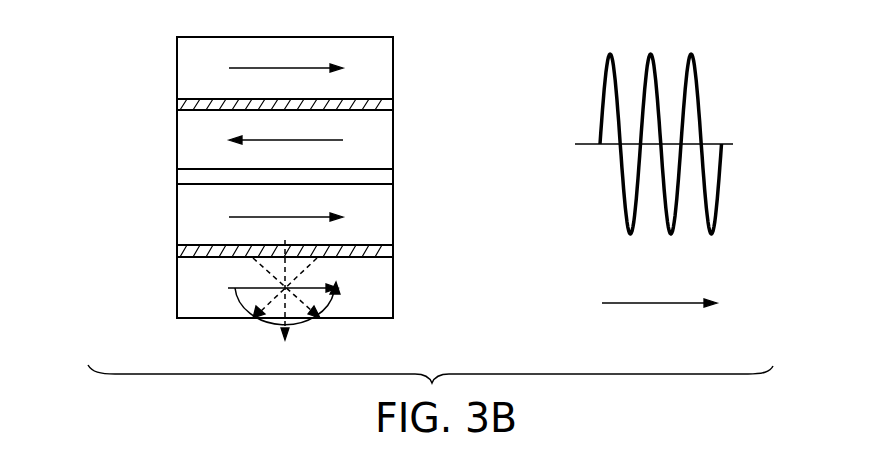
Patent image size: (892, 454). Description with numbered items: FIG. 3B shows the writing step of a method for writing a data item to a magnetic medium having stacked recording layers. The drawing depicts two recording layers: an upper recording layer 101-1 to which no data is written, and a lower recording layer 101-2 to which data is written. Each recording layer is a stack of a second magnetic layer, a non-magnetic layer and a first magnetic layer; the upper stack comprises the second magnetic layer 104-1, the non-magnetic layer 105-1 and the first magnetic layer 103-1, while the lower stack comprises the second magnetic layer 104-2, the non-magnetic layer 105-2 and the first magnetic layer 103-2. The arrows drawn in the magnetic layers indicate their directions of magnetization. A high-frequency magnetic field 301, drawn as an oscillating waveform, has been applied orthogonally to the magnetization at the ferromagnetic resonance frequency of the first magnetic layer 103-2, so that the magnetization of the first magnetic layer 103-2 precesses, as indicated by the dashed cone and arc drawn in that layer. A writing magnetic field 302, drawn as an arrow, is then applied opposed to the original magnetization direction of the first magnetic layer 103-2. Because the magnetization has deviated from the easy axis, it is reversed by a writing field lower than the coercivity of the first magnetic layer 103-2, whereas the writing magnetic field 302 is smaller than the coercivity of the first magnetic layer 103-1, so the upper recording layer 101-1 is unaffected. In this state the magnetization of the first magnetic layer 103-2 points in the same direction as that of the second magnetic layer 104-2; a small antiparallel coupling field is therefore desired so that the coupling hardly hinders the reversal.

The recording layer 101-1 is at (158, 37).
The recording layer 101-2 is at (158, 182).
The second magnetic layer 104-1 is at (393, 66).
The non-magnetic layer 105-1 is at (393, 105).
The first magnetic layer 103-1 is at (393, 141).
The second magnetic layer 104-2 is at (393, 214).
The non-magnetic layer 105-2 is at (393, 252).
The first magnetic layer 103-2 is at (393, 290).
The high-frequency magnetic field 301 is at (702, 102).
The writing magnetic field 302 is at (667, 303).